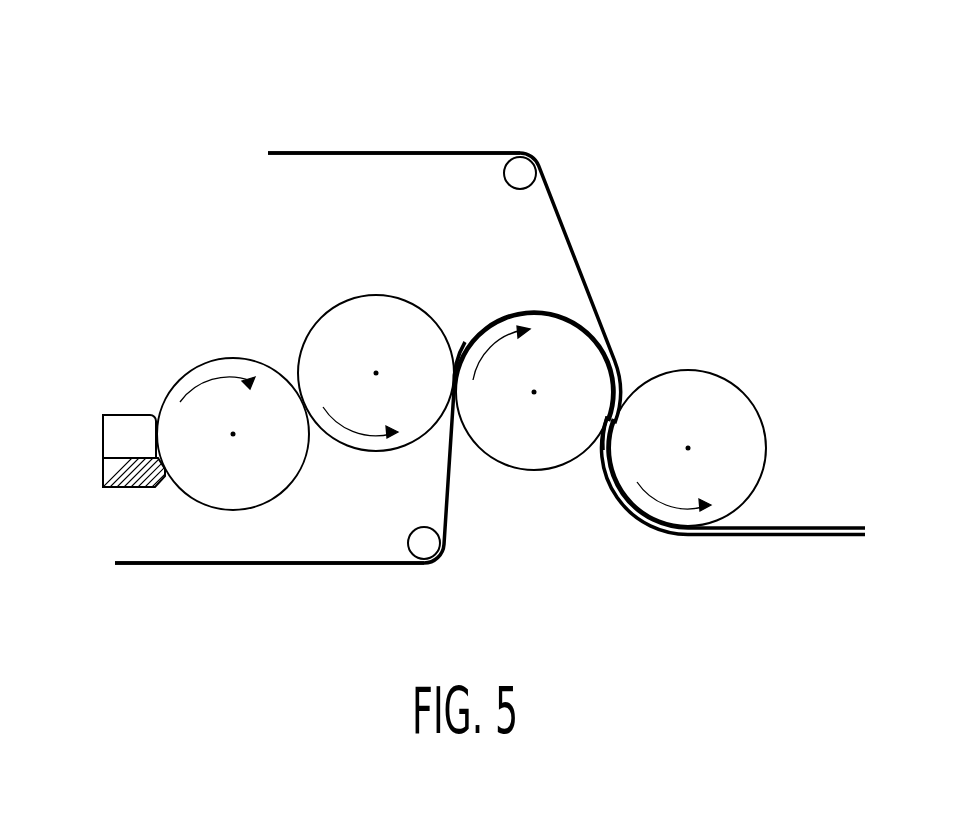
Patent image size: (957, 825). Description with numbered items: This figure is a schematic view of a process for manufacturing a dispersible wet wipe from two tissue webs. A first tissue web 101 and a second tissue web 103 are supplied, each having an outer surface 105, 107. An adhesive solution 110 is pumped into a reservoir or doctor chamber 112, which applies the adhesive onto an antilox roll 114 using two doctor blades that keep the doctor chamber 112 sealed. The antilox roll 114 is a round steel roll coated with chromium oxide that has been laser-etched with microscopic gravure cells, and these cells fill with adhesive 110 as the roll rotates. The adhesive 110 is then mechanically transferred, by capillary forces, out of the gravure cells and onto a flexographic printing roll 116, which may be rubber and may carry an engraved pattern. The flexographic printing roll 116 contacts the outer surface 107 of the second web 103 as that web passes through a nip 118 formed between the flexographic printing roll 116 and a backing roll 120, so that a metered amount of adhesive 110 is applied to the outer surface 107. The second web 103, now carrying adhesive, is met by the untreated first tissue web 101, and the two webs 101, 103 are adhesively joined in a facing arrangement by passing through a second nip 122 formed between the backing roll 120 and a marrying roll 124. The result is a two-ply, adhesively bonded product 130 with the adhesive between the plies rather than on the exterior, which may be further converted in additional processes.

The first tissue web 101 is at (332, 131).
The second tissue web 103 is at (248, 574).
The outer surface 105 is at (398, 157).
The outer surface 107 is at (334, 560).
The adhesive solution 110 is at (128, 482).
The doctor chamber 112 is at (123, 410).
The antilox roll 114 is at (208, 368).
The flexographic printing roll 116 is at (338, 328).
The nip 118 is at (459, 334).
The backing roll 120 is at (543, 328).
The second nip 122 is at (595, 452).
The marrying roll 124 is at (708, 397).
The two-ply adhesively bonded product 130 is at (834, 547).